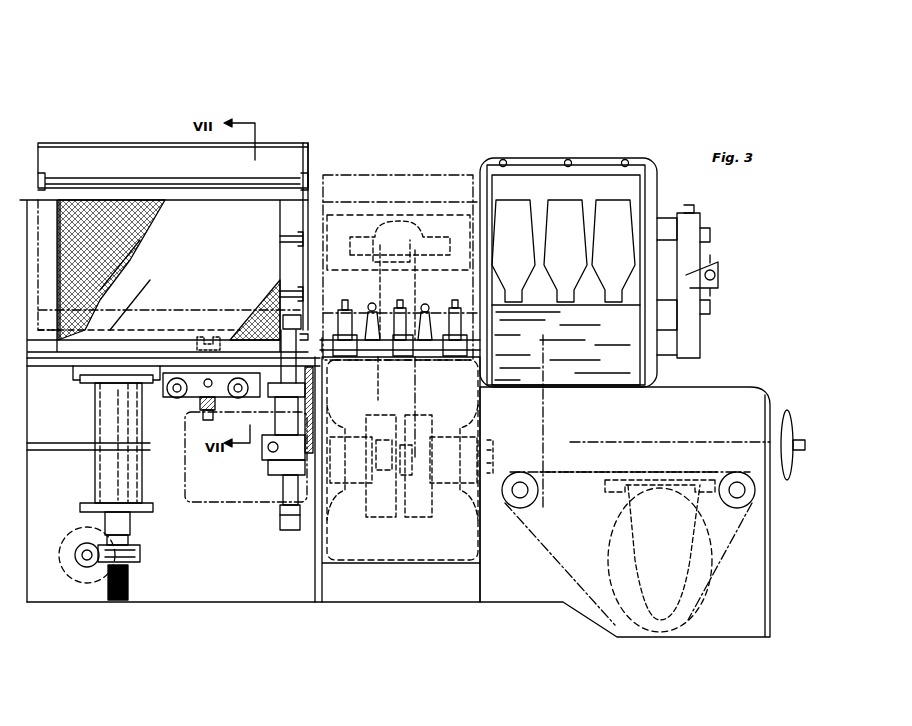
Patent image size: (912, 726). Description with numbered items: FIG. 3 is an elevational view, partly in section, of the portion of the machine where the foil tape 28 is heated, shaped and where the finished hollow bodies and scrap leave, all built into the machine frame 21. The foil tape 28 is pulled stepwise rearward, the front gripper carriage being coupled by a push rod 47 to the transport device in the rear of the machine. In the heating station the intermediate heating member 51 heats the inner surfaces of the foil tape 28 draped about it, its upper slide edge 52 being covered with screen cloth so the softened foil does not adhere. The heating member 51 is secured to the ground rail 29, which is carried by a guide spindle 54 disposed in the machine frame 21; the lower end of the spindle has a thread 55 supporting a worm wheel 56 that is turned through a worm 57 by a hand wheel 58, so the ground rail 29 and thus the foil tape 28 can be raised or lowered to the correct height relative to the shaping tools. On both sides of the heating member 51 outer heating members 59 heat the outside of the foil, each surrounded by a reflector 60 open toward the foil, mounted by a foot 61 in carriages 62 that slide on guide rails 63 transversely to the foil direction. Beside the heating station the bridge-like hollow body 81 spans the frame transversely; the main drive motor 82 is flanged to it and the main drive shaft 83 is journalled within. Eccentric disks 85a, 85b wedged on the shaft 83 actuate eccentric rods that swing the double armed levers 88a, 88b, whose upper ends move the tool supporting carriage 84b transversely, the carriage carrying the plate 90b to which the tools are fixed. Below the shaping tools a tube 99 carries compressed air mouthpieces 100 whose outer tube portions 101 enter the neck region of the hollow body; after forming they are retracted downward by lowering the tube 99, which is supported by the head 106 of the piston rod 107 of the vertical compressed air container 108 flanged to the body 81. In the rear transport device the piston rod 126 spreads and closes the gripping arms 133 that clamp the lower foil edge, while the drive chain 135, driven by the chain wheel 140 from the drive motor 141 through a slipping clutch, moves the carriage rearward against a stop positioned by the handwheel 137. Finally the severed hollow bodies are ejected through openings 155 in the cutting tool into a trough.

The machine frame 21 is at (722, 380).
The foil tape 28 is at (360, 200).
The ground rail 29 is at (50, 370).
The push rod 47 is at (60, 451).
The intermediate heating member 51 is at (268, 226).
The upper slide edge 52 is at (214, 202).
The guide spindle 54 is at (100, 385).
The thread 55 is at (129, 584).
The worm wheel 56 is at (141, 554).
The worm 57 is at (87, 552).
The hand wheel 58 is at (60, 565).
The heating members 59 is at (116, 180).
The reflector 60 is at (309, 160).
The foot 61 is at (207, 337).
The carriages 62 is at (190, 373).
The guide rails 63 is at (173, 393).
The bridge-like hollow body 81 is at (333, 548).
The main drive motor 82 is at (236, 503).
The main drive shaft 83 is at (440, 435).
The tool supporting carriage 84b is at (352, 247).
The eccentric disk 85a is at (368, 495).
The eccentric disk 85b is at (425, 495).
The double armed lever 88a is at (416, 378).
The double armed lever 88b is at (378, 380).
The plate 90b is at (414, 190).
The tube 99 is at (328, 340).
The mouthpieces 100 is at (350, 330).
The outer tube portions 101 is at (400, 308).
The head 106 is at (294, 321).
The piston rod 107 is at (288, 362).
The container for compressed air 108 is at (268, 455).
The piston rod 126 is at (545, 413).
The gripping arms 133 is at (427, 312).
The drive chain 135 is at (556, 548).
The handwheel 137 is at (787, 410).
The drive chain wheel 140 is at (705, 608).
The drive motor 141 is at (614, 515).
The openings 155 is at (606, 270).